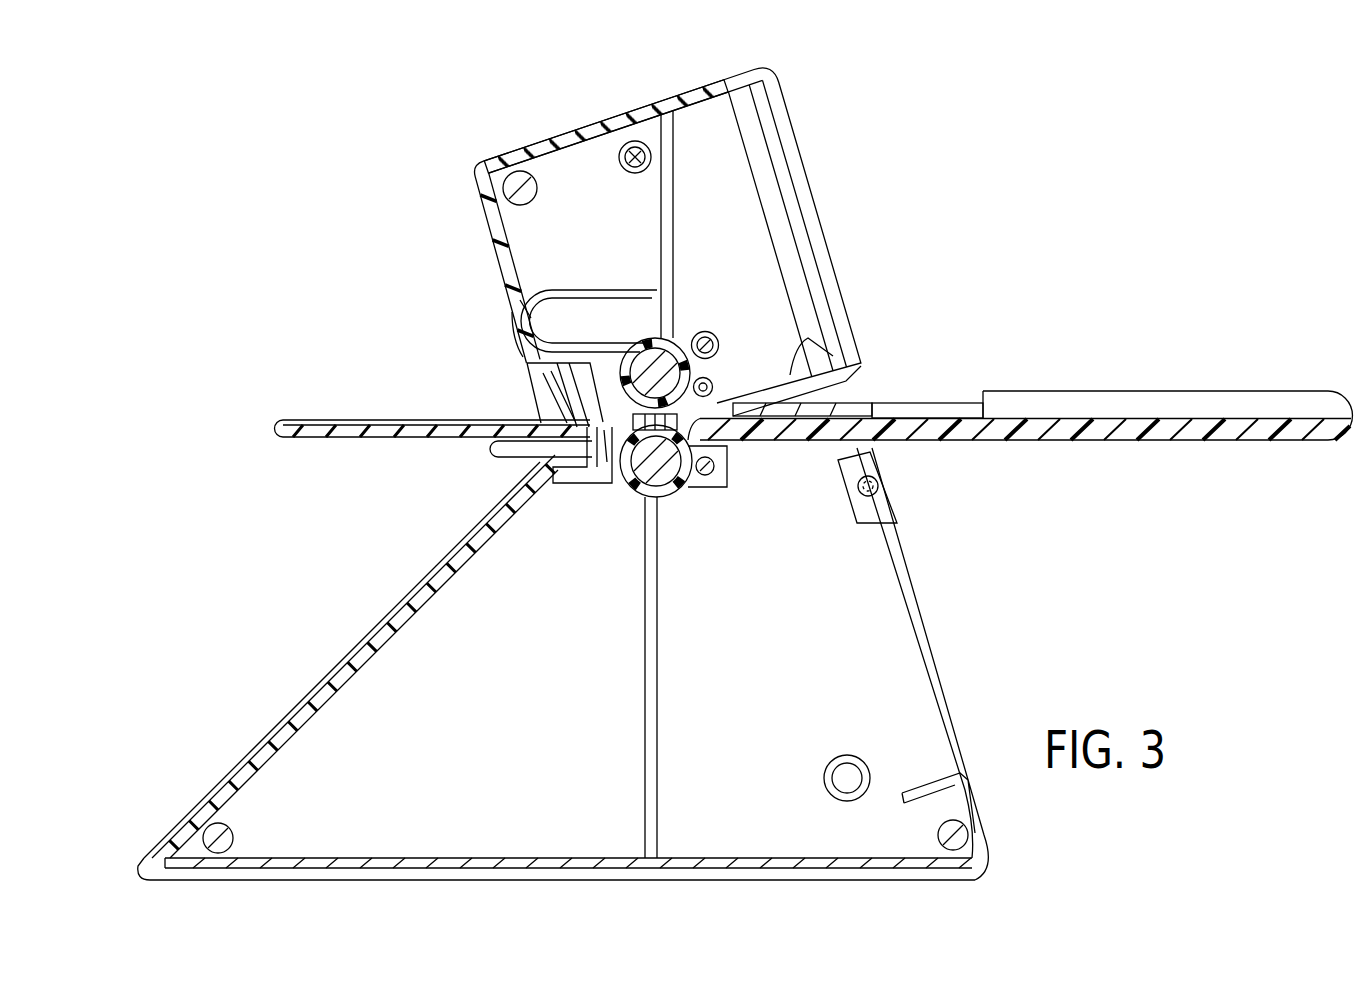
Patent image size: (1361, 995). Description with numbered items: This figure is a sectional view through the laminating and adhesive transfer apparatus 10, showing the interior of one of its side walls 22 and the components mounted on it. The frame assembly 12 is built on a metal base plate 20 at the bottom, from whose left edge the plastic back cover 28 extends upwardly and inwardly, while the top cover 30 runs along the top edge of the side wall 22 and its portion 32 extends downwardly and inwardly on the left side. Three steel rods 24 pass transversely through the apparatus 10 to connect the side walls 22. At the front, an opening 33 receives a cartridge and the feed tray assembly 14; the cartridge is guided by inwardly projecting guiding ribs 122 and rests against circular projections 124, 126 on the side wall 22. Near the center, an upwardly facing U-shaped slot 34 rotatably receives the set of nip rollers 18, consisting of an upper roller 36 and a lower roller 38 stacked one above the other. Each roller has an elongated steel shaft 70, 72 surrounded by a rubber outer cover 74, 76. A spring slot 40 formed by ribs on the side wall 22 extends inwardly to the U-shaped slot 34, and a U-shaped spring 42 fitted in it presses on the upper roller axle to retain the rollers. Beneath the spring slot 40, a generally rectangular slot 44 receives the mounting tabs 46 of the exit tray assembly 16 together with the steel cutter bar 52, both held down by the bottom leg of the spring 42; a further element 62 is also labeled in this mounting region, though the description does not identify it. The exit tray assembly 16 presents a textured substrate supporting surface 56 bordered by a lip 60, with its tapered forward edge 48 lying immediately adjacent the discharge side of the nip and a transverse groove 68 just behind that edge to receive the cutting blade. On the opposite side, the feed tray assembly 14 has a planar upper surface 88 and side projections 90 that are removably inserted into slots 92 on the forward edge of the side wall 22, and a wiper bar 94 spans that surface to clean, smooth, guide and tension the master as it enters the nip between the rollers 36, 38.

The laminating and adhesive transfer apparatus 10 is at (868, 72).
The frame assembly 12 is at (993, 781).
The feed tray assembly 14 is at (1200, 472).
The exit tray assembly 16 is at (248, 440).
The set of nip rollers 18 is at (708, 328).
The base plate 20 is at (768, 870).
The side walls 22 is at (512, 825).
The steel rods 24 is at (516, 182).
The back cover 28 is at (300, 697).
The top cover 30 is at (680, 100).
The portion of the top cover 32 is at (478, 218).
The opening 33 is at (925, 600).
The U-shaped nip roller receiving slot 34 is at (727, 466).
The upper roller 36 is at (713, 386).
The lower roller 38 is at (690, 492).
The spring slot 40 is at (582, 330).
The U-shaped spring 42 is at (556, 296).
The generally rectangular slot 44 is at (560, 378).
The mounting tabs 46 is at (597, 470).
The tapered forward edge 48 is at (601, 468).
The cutter bar 52 is at (525, 355).
The substrate supporting surface 56 is at (355, 420).
The lip 60 is at (292, 420).
The latch strip 62 is at (575, 412).
The groove 68 is at (560, 447).
The shaft 70 is at (665, 345).
The shaft 72 is at (648, 482).
The rubber outer cover 74 is at (716, 342).
The rubber outer cover 76 is at (662, 495).
The planar upper surface 88 is at (1225, 418).
The projections 90 is at (878, 486).
The slots 92 is at (896, 510).
The wiper bar 94 is at (952, 403).
The guiding ribs 122 is at (833, 370).
The circular projection 124 is at (626, 145).
The circular projection 126 is at (824, 780).